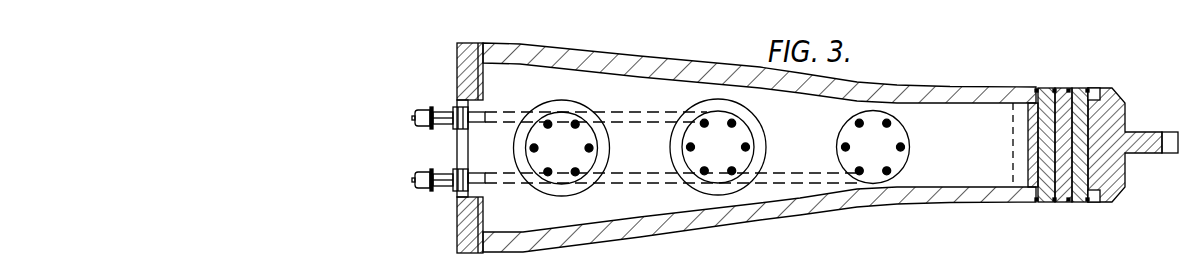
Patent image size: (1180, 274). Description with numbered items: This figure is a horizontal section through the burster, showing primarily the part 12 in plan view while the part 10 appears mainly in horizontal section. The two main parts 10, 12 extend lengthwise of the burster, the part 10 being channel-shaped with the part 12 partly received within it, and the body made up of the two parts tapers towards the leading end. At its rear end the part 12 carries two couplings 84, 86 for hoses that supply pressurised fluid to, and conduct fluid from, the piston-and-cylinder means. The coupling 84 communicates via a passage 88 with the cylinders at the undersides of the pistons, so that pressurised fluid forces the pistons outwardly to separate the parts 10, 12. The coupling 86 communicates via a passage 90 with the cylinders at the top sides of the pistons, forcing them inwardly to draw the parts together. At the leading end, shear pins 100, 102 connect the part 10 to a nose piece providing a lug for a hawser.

The main part 10 is at (729, 73).
The main part 12 is at (971, 158).
The coupling 84 is at (420, 108).
The coupling 86 is at (421, 190).
The passage 88 is at (646, 184).
The passage 90 is at (639, 110).
The shear pin 100 is at (1045, 103).
The shear pin 102 is at (1078, 103).